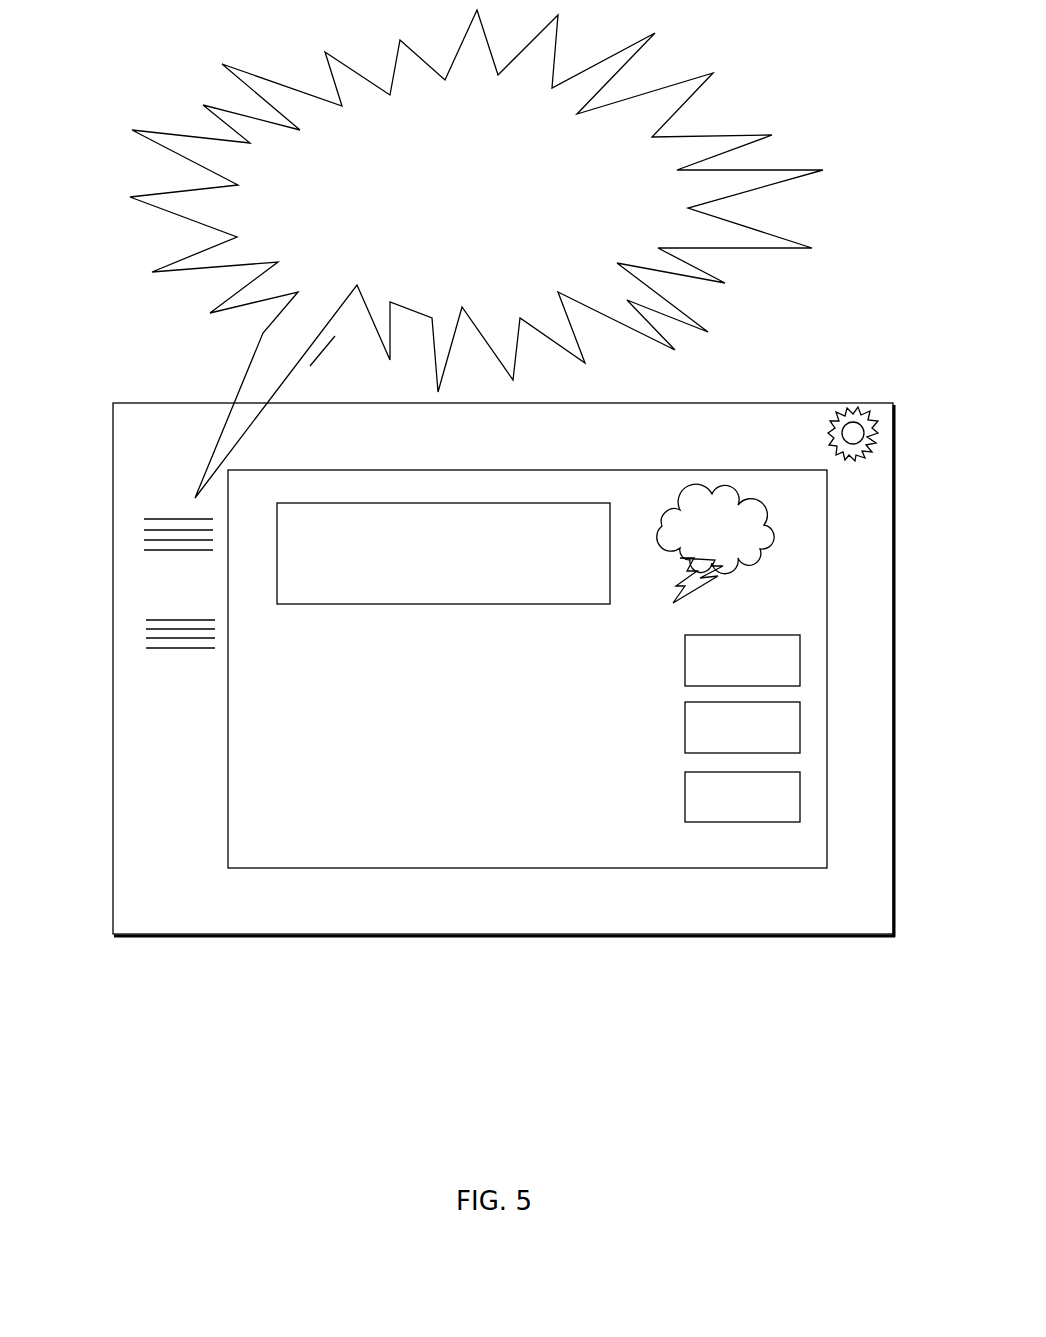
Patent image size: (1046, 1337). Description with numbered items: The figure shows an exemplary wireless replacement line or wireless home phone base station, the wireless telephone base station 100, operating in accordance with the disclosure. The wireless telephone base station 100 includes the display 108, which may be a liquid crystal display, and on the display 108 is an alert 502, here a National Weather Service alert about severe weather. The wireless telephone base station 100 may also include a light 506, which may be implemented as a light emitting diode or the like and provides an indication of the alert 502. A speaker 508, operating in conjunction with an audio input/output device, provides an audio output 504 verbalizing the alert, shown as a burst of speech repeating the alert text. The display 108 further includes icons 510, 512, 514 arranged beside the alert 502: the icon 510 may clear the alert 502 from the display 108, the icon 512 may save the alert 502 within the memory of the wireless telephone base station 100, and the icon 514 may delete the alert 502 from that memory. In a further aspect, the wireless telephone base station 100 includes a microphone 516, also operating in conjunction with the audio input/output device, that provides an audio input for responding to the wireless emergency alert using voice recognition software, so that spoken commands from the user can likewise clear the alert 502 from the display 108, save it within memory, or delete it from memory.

The wireless telephone base station 100 is at (629, 405).
The display 108 is at (788, 570).
The alert 502 is at (368, 510).
The audio output 504 is at (775, 170).
The light 506 is at (856, 430).
The speaker 508 is at (168, 509).
The icon 510 is at (792, 653).
The icon 512 is at (792, 720).
The icon 514 is at (795, 785).
The microphone 516 is at (172, 610).